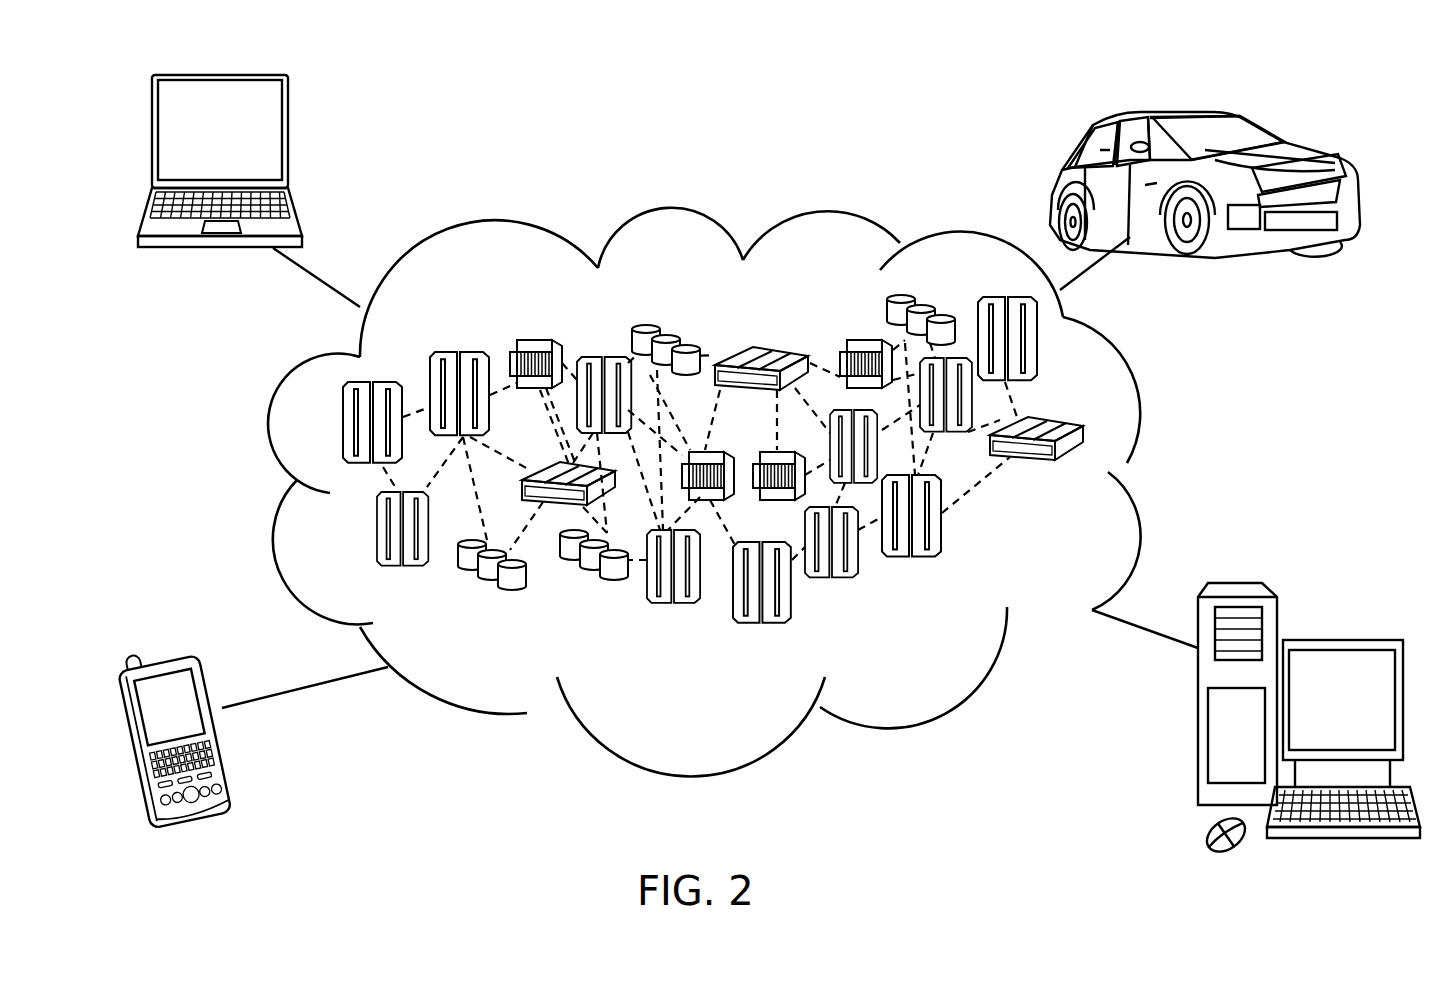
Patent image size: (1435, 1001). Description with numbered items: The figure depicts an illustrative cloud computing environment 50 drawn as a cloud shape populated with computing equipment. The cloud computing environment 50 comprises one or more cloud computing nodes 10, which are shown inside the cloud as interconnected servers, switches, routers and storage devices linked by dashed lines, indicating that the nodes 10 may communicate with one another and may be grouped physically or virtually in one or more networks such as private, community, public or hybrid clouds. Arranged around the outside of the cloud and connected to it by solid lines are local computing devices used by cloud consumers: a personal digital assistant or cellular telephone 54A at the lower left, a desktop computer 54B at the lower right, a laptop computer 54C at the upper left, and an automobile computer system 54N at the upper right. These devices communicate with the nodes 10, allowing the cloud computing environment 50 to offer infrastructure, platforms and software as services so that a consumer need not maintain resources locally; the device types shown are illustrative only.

The cloud computing nodes 10 is at (1118, 490).
The cloud computing environment 50 is at (1133, 385).
The personal digital assistant or cellular telephone 54A is at (128, 742).
The desktop computer 54B is at (1335, 638).
The laptop computer 54C is at (150, 137).
The automobile computer system 54N is at (1263, 132).